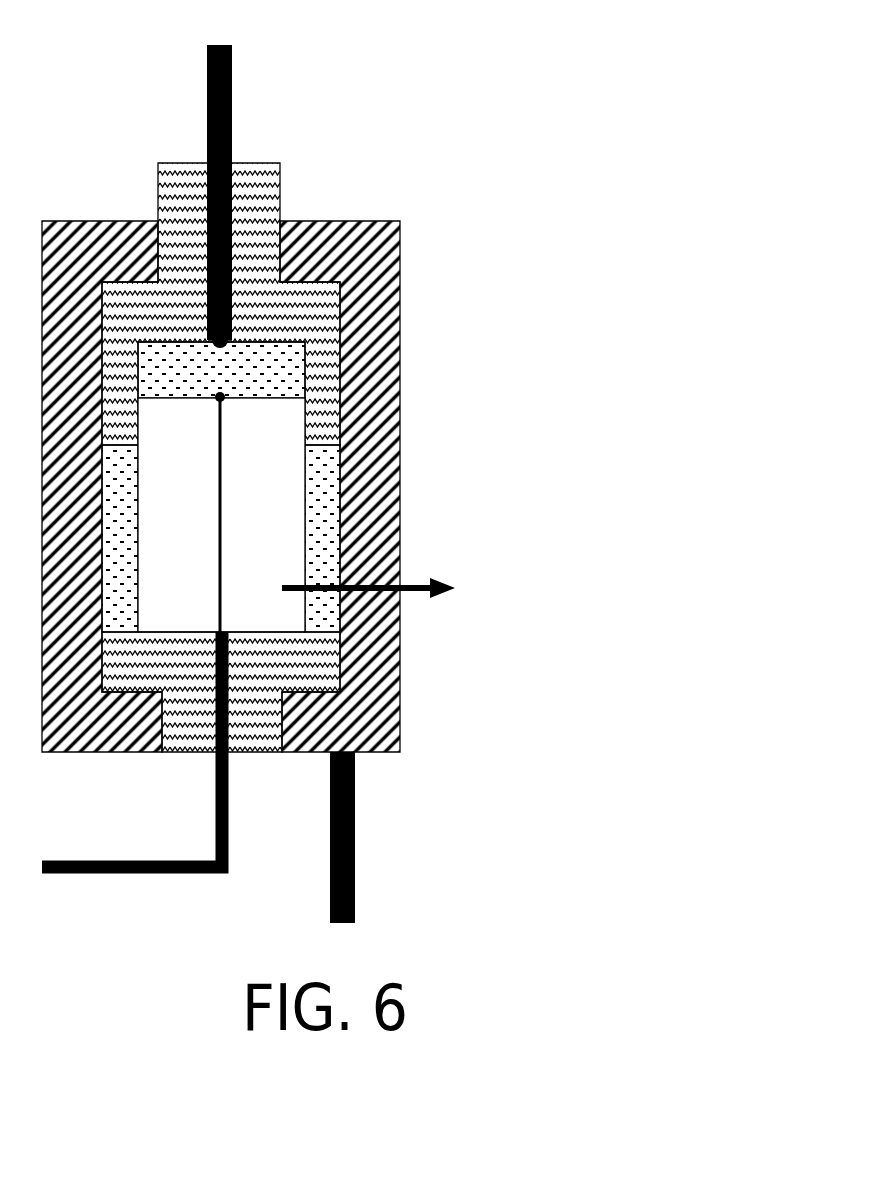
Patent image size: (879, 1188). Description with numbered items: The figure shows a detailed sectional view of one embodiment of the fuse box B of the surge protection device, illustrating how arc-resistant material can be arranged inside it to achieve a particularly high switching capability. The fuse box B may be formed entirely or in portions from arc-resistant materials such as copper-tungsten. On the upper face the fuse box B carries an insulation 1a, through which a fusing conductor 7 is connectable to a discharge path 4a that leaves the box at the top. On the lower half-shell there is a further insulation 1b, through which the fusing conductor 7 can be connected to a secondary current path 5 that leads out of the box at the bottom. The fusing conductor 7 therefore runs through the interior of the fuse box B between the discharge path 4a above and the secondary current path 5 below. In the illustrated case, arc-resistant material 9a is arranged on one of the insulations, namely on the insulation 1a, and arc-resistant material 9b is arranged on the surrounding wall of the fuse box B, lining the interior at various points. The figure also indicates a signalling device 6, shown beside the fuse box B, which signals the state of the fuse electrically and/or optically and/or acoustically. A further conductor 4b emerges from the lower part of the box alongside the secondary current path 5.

The discharge path 4a is at (232, 82).
The insulation 1a is at (258, 172).
The fuse box B is at (345, 228).
The arc-resistant material 9a is at (263, 365).
The fusing conductor 7 is at (232, 465).
The arc-resistant material 9b is at (322, 470).
The signalling device 6 is at (442, 568).
The insulation 1b is at (255, 710).
The secondary current path 5 is at (230, 838).
The lower electrode lead 4b is at (355, 835).